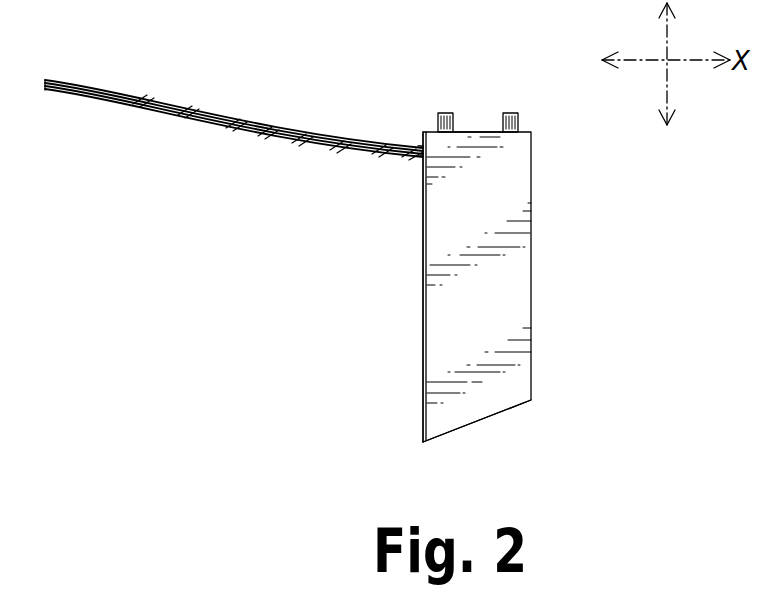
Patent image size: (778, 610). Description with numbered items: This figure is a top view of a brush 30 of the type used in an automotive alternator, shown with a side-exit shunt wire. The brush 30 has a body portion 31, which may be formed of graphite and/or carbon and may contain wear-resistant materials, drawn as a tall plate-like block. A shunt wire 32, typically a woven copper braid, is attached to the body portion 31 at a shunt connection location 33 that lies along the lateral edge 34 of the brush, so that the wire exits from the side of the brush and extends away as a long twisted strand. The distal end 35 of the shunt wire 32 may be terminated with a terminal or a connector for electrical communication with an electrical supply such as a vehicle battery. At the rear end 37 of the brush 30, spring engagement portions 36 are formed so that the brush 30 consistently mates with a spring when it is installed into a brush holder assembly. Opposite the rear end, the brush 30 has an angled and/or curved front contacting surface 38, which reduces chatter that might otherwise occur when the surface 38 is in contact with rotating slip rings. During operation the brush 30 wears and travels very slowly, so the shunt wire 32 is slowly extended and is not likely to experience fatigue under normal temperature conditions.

The brush 30 is at (602, 258).
The body portion 31 is at (446, 222).
The shunt wire 32 is at (297, 130).
The shunt connection location 33 is at (423, 148).
The lateral edge 34 is at (423, 357).
The distal end 35 is at (63, 80).
The spring engagement portions 36 is at (511, 113).
The rear end 37 is at (481, 113).
The front contacting surface 38 is at (455, 431).